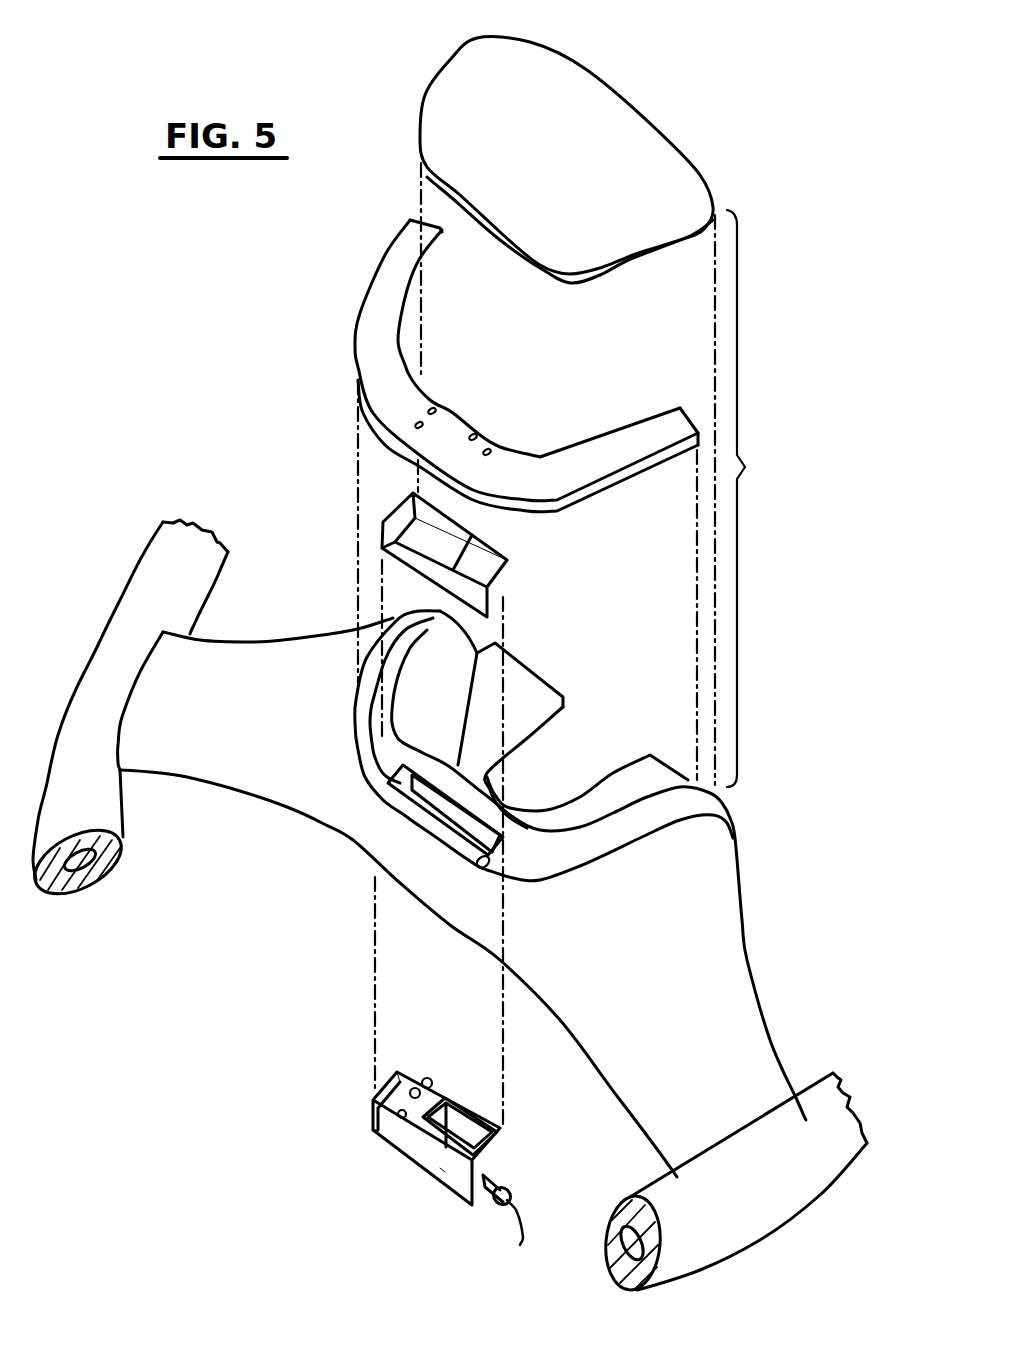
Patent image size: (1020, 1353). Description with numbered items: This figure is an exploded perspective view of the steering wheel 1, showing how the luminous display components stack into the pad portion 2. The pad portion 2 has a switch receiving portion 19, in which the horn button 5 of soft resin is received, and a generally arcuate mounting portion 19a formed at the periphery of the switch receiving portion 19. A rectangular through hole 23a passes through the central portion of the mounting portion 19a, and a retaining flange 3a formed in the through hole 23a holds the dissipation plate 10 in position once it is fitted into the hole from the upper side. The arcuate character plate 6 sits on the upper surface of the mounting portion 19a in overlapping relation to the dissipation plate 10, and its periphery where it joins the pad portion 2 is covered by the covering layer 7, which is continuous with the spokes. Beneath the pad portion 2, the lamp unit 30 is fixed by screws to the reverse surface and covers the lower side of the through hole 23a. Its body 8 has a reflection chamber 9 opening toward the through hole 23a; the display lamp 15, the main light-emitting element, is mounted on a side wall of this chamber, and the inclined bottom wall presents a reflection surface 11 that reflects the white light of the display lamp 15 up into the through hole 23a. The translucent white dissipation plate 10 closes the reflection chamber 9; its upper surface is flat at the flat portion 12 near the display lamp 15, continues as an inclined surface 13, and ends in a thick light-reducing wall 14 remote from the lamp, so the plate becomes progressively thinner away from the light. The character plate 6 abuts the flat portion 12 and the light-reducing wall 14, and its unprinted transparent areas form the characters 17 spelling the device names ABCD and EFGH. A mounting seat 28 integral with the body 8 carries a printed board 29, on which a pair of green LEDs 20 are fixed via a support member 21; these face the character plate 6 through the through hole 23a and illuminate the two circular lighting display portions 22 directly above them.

The steering wheel 1 is at (719, 792).
The pad portion 2 is at (747, 498).
The retaining flange 3a is at (408, 822).
The horn button 5 is at (668, 157).
The character plate 6 is at (526, 462).
The covering layer 7 is at (430, 873).
The body 8 is at (463, 1188).
The reflection chamber 9 is at (463, 1122).
The dissipation plate 10 is at (500, 585).
The reflection surface 11 is at (437, 1123).
The flat portion 12 is at (485, 568).
The inclined surface 13 is at (450, 537).
The light-reducing wall 14 is at (404, 497).
The display lamp 15 is at (503, 1182).
The characters 17 is at (487, 449).
The switch receiving portion 19 is at (563, 703).
The mounting portion 19a is at (577, 858).
The LEDs 20 is at (423, 1080).
The support member 21 is at (395, 1104).
The lighting display portions 22 is at (432, 408).
The through hole 23a is at (485, 869).
The mounting seat 28 is at (375, 1128).
The printed board 29 is at (397, 1080).
The lamp unit 30 is at (440, 1168).